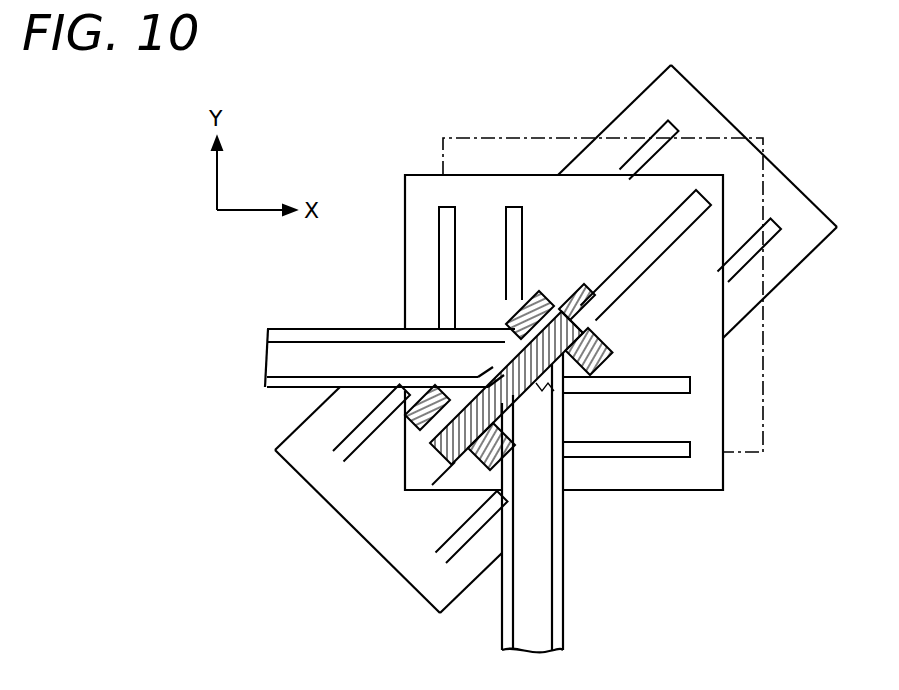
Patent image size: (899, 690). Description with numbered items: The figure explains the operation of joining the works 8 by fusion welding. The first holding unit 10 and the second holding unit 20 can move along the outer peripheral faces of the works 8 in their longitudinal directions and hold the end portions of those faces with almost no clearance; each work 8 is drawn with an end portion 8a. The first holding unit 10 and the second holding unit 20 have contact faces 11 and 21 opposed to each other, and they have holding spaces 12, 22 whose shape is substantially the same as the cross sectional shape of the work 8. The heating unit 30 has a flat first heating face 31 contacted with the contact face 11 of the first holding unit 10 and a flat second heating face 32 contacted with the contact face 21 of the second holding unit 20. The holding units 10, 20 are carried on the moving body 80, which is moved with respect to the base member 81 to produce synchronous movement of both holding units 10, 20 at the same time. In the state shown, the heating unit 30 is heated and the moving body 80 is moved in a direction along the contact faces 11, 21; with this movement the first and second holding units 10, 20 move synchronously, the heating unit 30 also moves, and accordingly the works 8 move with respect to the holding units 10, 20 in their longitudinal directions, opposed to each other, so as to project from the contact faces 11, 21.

The work 8 is at (318, 333).
The end portion of arm 8a is at (488, 358).
The first holding unit 10 is at (598, 350).
The contact face 11 is at (607, 323).
The holding space 12 is at (563, 410).
The second holding unit 20 is at (538, 297).
The contact face 21 is at (570, 313).
The holding space 22 is at (490, 327).
The heating unit 30 is at (435, 468).
The first heating face 31 is at (470, 472).
The second heating face 32 is at (430, 420).
The moving body 80 is at (710, 310).
The base member 81 is at (785, 195).